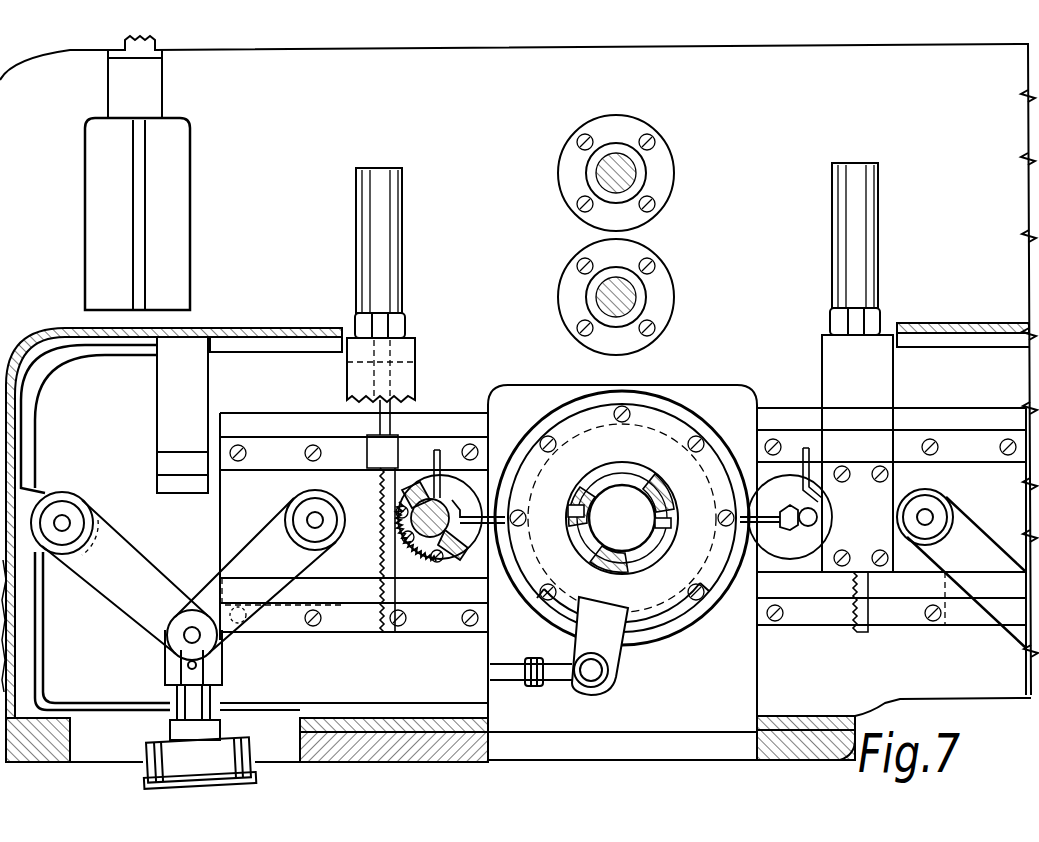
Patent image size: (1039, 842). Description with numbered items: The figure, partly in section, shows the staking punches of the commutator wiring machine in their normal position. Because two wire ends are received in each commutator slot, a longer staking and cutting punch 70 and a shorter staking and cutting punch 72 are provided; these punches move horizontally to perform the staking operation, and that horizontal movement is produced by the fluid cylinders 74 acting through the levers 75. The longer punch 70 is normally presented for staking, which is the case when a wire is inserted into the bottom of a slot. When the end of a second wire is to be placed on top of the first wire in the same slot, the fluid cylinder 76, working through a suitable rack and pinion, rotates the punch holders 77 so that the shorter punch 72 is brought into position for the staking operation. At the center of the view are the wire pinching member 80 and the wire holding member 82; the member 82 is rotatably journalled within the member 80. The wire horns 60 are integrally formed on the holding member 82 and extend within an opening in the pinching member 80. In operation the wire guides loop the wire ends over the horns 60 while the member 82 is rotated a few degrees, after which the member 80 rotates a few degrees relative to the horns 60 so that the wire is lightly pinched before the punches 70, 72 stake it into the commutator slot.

The wire horns 60 is at (575, 497).
The longer staking and cutting punch 70 is at (503, 480).
The shorter staking and cutting punch 72 is at (438, 450).
The fluid cylinder 74 is at (178, 760).
The lever 75 is at (257, 548).
The fluid cylinder 76 is at (388, 233).
The punch holder 77 is at (460, 560).
The wire pinching member 80 is at (622, 473).
The wire holding member 82 is at (645, 483).